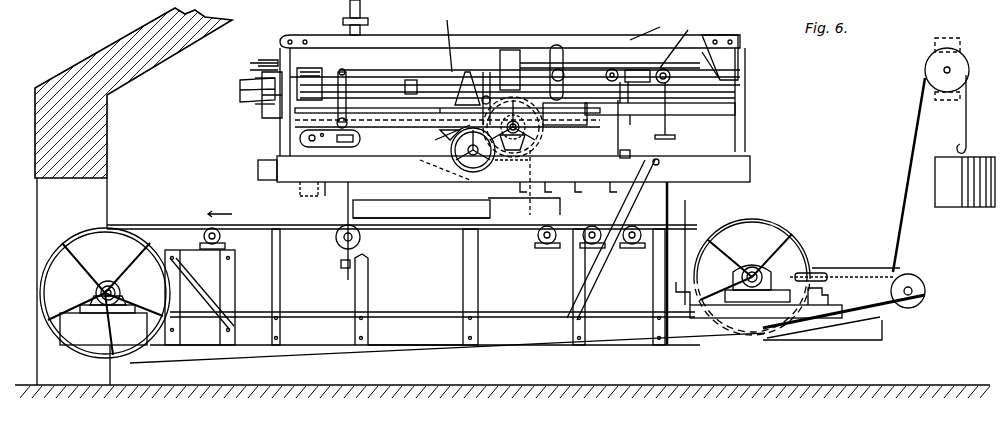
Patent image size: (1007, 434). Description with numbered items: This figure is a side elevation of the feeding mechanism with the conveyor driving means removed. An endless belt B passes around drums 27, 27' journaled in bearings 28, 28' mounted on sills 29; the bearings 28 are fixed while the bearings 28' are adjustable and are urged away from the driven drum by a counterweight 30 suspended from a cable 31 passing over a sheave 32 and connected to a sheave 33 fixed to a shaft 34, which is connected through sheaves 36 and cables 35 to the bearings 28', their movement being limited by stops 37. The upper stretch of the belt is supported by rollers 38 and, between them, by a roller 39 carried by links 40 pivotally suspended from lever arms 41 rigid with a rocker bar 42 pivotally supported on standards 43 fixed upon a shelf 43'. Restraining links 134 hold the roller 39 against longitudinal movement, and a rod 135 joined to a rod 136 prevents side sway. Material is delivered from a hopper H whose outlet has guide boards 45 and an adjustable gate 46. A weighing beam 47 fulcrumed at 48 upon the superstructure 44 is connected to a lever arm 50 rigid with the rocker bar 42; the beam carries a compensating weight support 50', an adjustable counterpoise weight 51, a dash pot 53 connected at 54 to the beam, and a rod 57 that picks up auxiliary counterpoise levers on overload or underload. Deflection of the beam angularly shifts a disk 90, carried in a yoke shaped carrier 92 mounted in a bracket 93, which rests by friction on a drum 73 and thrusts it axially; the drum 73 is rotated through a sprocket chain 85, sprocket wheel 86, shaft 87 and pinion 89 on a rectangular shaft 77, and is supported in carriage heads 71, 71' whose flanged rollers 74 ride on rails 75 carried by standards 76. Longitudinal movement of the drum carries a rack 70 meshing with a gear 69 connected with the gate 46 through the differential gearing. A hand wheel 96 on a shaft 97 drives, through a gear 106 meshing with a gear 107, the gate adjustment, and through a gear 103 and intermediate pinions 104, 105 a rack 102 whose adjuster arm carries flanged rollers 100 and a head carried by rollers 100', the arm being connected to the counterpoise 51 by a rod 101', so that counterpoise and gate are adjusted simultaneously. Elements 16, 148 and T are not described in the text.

The rod 16 is at (700, 97).
The drum 27 is at (105, 275).
The drum 27' is at (766, 268).
The bearings 28 is at (121, 291).
The bearings 28' is at (782, 261).
The sills 29 is at (415, 332).
The counterweight 30 is at (975, 208).
The cable 31 is at (919, 128).
The sheave 32 is at (955, 72).
The sheave 33 is at (925, 280).
The shaft 34 is at (916, 290).
The cables 35 is at (848, 275).
The sheaves 36 is at (910, 276).
The stops 37 is at (830, 292).
The rollers 38 is at (228, 232).
The roller 39 is at (361, 240).
The links 40 is at (340, 208).
The lever arms 41 is at (300, 132).
The rocker bar 42 is at (328, 130).
The standards 43 is at (253, 170).
The shelf 43' is at (304, 201).
The superstructure 44 is at (715, 110).
The guide boards 45 is at (488, 200).
The gate 46 is at (540, 178).
The weighing beam 47 is at (487, 70).
The fulcrum 48 is at (468, 72).
The lever arm 50 is at (436, 155).
The compensating weight support 50' is at (678, 110).
The counterpoise weight 51 is at (556, 45).
The dash pot 53 is at (630, 158).
The connection 54 is at (645, 72).
The rod 57 is at (626, 116).
The gear 69 is at (540, 142).
The rack 70 is at (565, 114).
The head 71 is at (452, 38).
The head 71' is at (685, 41).
The drum 73 is at (616, 70).
The flanged rollers 74 is at (418, 82).
The rails 75 is at (370, 83).
The standards 76 is at (400, 90).
The shaft 77 is at (425, 72).
The sprocket chain 85 is at (255, 104).
The sprocket wheel 86 is at (255, 80).
The shaft 87 is at (257, 90).
The pinion 89 is at (340, 70).
The disk 90 is at (565, 72).
The yoke shaped carrier 92 is at (625, 62).
The bracket 93 is at (600, 66).
The hand wheel 96 is at (462, 165).
The shaft 97 is at (450, 198).
The flanged rollers 100 is at (330, 155).
The rollers 100' is at (524, 56).
The rod 101' is at (510, 50).
The rack 102 is at (400, 120).
The gear 103 is at (417, 113).
The intermediate pinion 104 is at (430, 170).
The intermediate pinion 105 is at (513, 127).
The gear 106 is at (512, 160).
The gear 107 is at (616, 140).
The restraining links 134 is at (432, 222).
The rod 135 is at (347, 268).
The rod 136 is at (340, 265).
The bracket 148 is at (268, 60).
The endless belt B is at (362, 357).
The hopper H is at (652, 26).
The table T is at (261, 70).